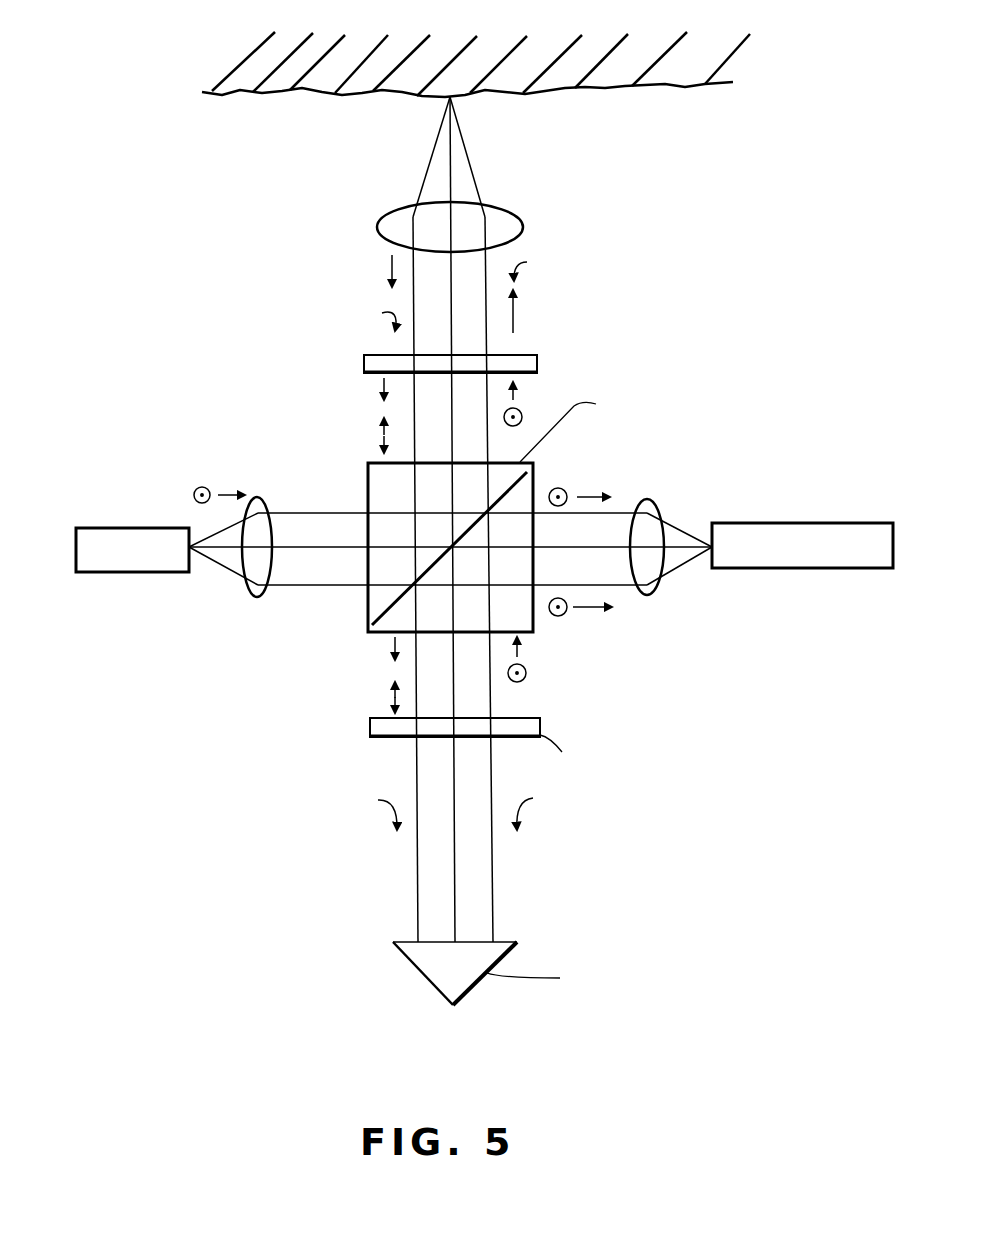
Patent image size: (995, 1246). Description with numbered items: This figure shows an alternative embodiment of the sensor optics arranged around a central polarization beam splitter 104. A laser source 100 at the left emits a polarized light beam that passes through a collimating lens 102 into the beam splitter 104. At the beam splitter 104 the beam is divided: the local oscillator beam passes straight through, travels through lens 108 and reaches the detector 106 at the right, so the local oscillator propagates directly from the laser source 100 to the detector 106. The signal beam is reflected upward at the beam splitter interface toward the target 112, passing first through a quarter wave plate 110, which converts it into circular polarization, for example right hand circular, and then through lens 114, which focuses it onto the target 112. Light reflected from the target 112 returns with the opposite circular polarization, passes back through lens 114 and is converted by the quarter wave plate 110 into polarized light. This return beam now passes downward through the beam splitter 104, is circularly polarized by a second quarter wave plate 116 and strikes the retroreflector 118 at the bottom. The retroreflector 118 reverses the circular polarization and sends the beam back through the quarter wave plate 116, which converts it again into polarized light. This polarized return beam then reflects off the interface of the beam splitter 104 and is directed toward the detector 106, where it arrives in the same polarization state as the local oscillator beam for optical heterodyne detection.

The laser source 100 is at (174, 498).
The collimating lens 102 is at (253, 502).
The beam splitter 104 is at (386, 605).
The detector 106 is at (868, 507).
The lens 108 is at (652, 505).
The quarter wave plate 110 is at (537, 357).
The target 112 is at (668, 84).
The lens 114 is at (518, 222).
The quarter wave plate 116 is at (370, 727).
The retroreflector 118 is at (418, 973).